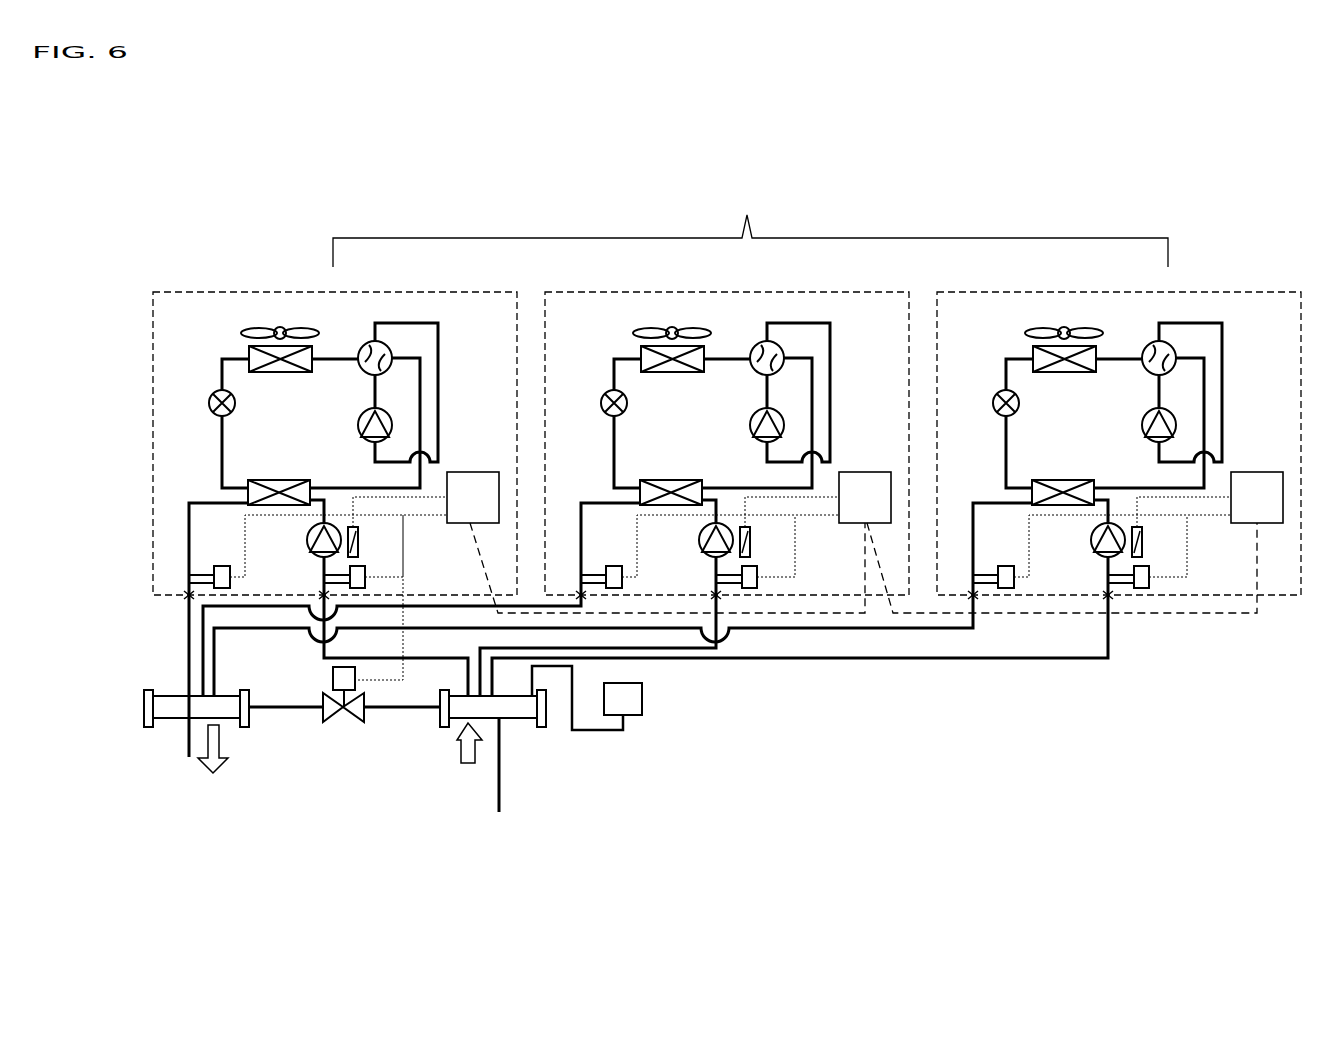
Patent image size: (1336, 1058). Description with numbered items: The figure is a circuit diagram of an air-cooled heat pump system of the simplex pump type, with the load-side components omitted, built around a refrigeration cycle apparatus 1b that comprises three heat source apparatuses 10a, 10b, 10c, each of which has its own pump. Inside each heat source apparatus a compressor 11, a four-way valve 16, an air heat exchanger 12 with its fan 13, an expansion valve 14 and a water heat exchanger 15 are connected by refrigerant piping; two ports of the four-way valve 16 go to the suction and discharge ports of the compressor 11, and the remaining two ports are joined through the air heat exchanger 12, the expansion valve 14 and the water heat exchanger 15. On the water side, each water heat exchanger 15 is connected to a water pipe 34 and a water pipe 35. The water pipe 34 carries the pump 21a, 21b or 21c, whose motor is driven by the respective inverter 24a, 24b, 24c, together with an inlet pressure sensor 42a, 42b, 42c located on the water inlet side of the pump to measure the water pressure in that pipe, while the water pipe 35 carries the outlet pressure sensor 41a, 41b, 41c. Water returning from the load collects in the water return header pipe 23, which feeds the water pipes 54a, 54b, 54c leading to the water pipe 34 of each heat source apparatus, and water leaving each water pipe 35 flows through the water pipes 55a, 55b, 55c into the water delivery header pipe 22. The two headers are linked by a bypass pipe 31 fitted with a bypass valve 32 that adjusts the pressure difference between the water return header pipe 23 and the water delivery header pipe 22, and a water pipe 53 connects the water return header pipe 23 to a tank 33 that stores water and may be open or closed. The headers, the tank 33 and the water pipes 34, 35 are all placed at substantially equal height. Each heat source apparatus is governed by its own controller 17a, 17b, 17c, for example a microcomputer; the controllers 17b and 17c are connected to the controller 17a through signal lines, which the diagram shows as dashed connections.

The refrigeration cycle apparatus 1b is at (747, 213).
The heat source apparatus 10a is at (358, 292).
The heat source apparatus 10b is at (727, 428).
The heat source apparatus 10c is at (1119, 428).
The compressor 11 is at (358, 428).
The air heat exchanger 12 is at (292, 372).
The fan 13 is at (240, 334).
The expansion valve 14 is at (210, 403).
The water heat exchanger 15 is at (272, 480).
The four-way valve 16 is at (361, 349).
The controller 17a is at (477, 472).
The controller 17b is at (865, 479).
The controller 17c is at (1257, 479).
The pump 21a is at (308, 547).
The pump 21b is at (696, 561).
The pump 21c is at (1088, 561).
The water delivery header pipe 22 is at (173, 696).
The water return header pipe 23 is at (520, 720).
The inverter 24a is at (358, 547).
The inverter 24b is at (789, 527).
The inverter 24c is at (1181, 527).
The bypass pipe 31 is at (388, 710).
The bypass valve 32 is at (333, 683).
The tank 33 is at (643, 697).
The water pipe 34 is at (325, 497).
The water pipe 35 is at (204, 503).
The outlet pressure sensor 41a is at (222, 566).
The outlet pressure sensor 41b is at (710, 551).
The outlet pressure sensor 41c is at (1102, 551).
The inlet pressure sensor 42a is at (324, 580).
The inlet pressure sensor 42b is at (732, 551).
The inlet pressure sensor 42c is at (1124, 551).
The water pipe 53 is at (598, 733).
The water pipe 54a is at (468, 681).
The water pipe 54b is at (480, 648).
The water pipe 54c is at (690, 658).
The water pipe 55a is at (186, 633).
The water pipe 55b is at (203, 619).
The water pipe 55c is at (214, 655).